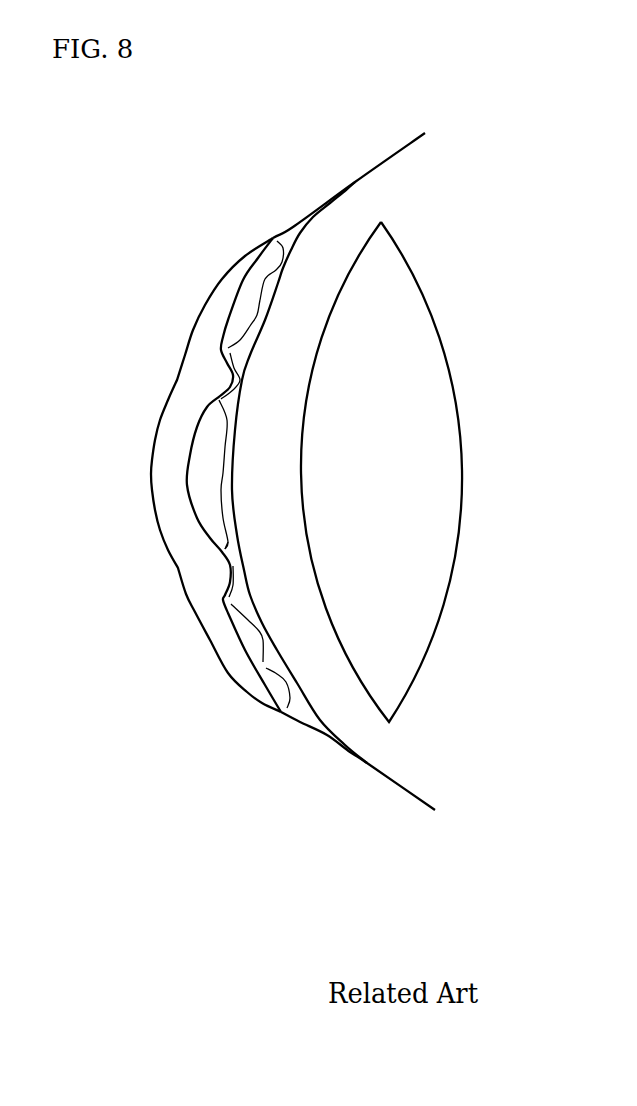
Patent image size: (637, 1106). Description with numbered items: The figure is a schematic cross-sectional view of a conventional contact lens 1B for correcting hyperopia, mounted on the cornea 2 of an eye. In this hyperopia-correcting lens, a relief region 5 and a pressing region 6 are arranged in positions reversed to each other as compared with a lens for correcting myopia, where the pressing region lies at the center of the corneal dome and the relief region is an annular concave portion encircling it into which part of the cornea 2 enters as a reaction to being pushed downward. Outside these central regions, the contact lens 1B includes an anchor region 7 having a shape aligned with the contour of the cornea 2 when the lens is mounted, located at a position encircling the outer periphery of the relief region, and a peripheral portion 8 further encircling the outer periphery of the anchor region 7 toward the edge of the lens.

The contact lens for correcting hyperopia 1B is at (218, 283).
The cornea 2 is at (300, 228).
The relief region 5 is at (227, 477).
The pressing region 6 is at (240, 380).
The anchor region 7 is at (253, 323).
The peripheral portion 8 is at (285, 268).